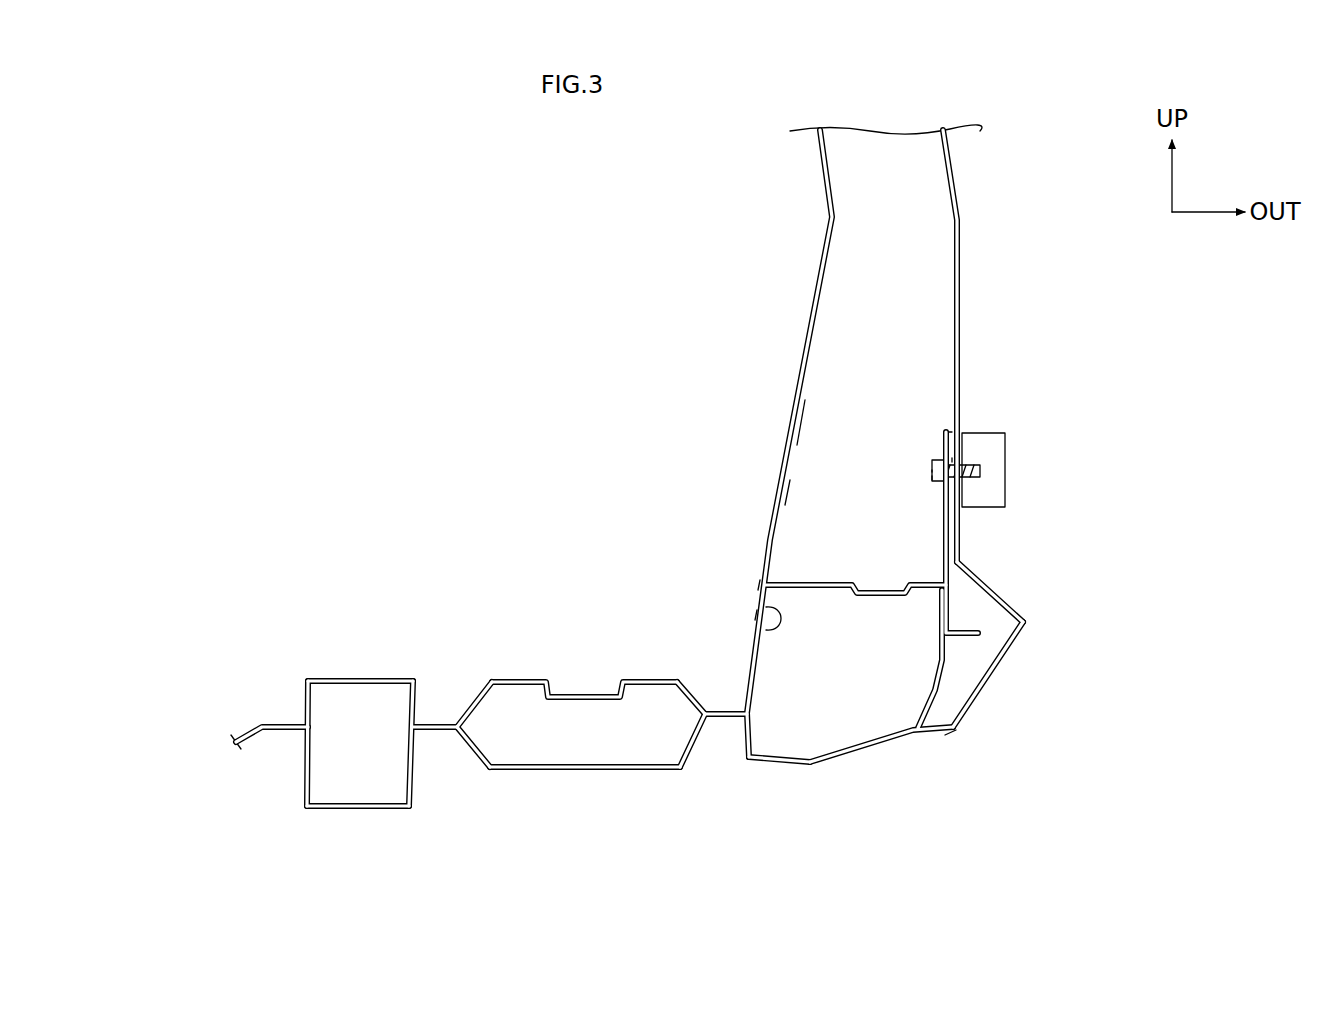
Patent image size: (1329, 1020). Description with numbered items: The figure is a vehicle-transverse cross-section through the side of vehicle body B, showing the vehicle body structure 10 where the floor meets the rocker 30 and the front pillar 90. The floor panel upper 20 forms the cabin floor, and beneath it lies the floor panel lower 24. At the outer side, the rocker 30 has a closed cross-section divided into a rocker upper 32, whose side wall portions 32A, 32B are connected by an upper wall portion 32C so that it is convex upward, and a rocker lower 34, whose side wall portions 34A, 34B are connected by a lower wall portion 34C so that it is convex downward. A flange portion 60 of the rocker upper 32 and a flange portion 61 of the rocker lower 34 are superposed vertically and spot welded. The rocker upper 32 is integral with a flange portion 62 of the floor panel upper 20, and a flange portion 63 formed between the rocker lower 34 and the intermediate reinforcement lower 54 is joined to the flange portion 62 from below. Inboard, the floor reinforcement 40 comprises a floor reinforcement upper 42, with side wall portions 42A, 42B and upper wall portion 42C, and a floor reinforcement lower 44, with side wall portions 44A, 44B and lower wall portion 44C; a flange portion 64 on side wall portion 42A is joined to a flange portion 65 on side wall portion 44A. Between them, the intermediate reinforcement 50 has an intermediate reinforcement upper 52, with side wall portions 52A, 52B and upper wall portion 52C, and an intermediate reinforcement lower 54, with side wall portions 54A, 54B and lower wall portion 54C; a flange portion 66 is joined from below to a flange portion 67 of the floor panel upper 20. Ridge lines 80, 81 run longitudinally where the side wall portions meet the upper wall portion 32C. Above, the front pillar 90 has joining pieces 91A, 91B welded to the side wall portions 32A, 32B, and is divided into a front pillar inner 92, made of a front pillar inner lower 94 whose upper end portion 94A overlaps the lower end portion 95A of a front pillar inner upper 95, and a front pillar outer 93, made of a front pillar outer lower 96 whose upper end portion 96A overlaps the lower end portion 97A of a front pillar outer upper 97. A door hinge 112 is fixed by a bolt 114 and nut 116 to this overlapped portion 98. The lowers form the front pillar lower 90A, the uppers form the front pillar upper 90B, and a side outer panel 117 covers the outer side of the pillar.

The vehicle body structure 10 is at (561, 283).
The floor panel upper 20 is at (258, 733).
The floor panel lower 24 is at (565, 770).
The rocker 30 is at (1126, 615).
The rocker upper 32 is at (955, 605).
The side wall portion 32A is at (755, 600).
The side wall portion 32B is at (955, 612).
The upper wall portion 32C is at (820, 585).
The rocker lower 34 is at (990, 680).
The side wall portion 34A is at (760, 765).
The side wall portion 34B is at (958, 728).
The lower wall portion 34C is at (853, 762).
The floor reinforcement 40 is at (377, 609).
The floor reinforcement upper 42 is at (375, 681).
The side wall portion 42A is at (305, 700).
The side wall portion 42B is at (418, 700).
The upper wall portion 42C is at (382, 681).
The floor reinforcement lower 44 is at (320, 798).
The side wall portion 44A is at (310, 810).
The side wall portion 44B is at (410, 808).
The lower wall portion 44C is at (345, 808).
The intermediate reinforcement 50 is at (477, 584).
The intermediate reinforcement upper 52 is at (547, 682).
The side wall portion 52A is at (478, 700).
The side wall portion 52B is at (690, 681).
The upper wall portion 52C is at (605, 697).
The intermediate reinforcement lower 54 is at (510, 768).
The side wall portion 54A is at (500, 772).
The side wall portion 54B is at (665, 770).
The lower wall portion 54C is at (625, 770).
The flange portion 60 is at (965, 636).
The flange portion 61 is at (943, 668).
The flange portion 62 is at (733, 712).
The flange portion 63 is at (751, 758).
The flange portion 64 is at (282, 724).
The flange portion 65 is at (272, 735).
The flange portion 66 is at (440, 732).
The flange portion 67 is at (440, 722).
The ridge line 80 is at (757, 580).
The ridge line 81 is at (955, 567).
The front pillar 90 is at (958, 193).
The front pillar lower 90A is at (757, 466).
The front pillar upper 90B is at (803, 232).
The joining piece 91A is at (765, 612).
The joining piece 91B is at (955, 586).
The front pillar inner 92 is at (664, 323).
The front pillar outer 93 is at (1100, 370).
The front pillar inner lower 94 is at (783, 430).
The upper end portion 94A is at (795, 386).
The front pillar inner upper 95 is at (806, 350).
The lower end portion 95A is at (807, 390).
The front pillar outer lower 96 is at (965, 527).
The upper end portion 96A is at (947, 462).
The front pillar outer upper 97 is at (963, 386).
The lower end portion 97A is at (960, 448).
The overlapped portion 98 is at (918, 480).
The door hinge 112 is at (1005, 462).
The bolt 114 is at (975, 472).
The nut 116 is at (934, 483).
The side outer panel 117 is at (965, 268).